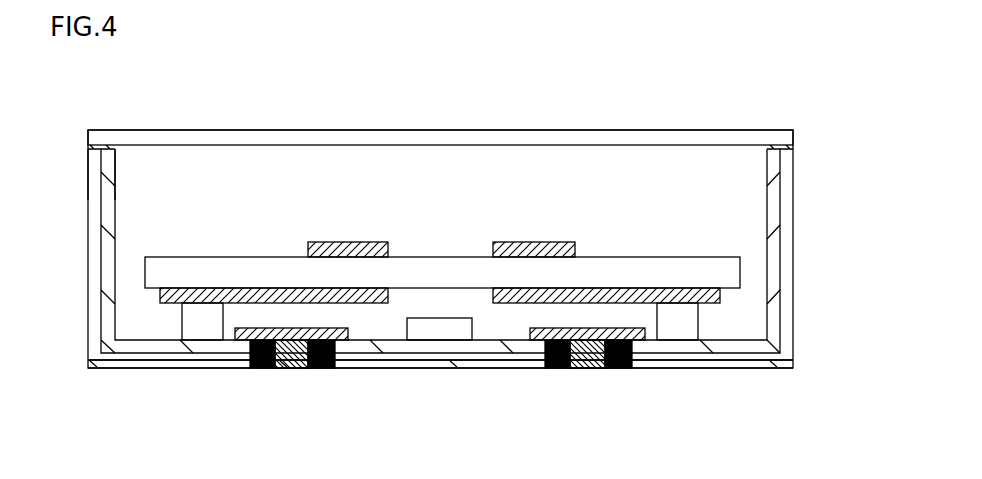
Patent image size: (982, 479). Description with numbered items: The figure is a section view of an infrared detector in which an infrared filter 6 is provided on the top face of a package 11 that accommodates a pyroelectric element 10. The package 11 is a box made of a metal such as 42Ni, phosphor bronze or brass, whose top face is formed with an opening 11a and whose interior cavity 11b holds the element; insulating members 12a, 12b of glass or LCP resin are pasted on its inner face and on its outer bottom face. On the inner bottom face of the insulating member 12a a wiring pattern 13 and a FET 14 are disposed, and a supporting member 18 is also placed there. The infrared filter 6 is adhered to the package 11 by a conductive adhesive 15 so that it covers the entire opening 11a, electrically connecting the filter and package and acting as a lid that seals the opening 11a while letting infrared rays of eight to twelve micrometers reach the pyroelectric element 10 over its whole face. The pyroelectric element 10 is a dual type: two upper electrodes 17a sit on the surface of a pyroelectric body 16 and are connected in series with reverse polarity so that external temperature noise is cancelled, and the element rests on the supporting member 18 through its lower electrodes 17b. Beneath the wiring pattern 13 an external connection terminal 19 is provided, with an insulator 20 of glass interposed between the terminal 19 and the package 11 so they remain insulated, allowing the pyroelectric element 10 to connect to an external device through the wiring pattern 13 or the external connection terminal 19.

The infrared filter 6 is at (611, 130).
The pyroelectric element 10 is at (457, 250).
The package 11 is at (797, 300).
The opening 11a is at (115, 162).
The cavity of package 11b is at (672, 173).
The insulating member 12a is at (782, 226).
The insulating member 12b is at (765, 369).
The wiring pattern 13 is at (243, 340).
The FET 14 is at (442, 336).
The conductive adhesive 15 is at (795, 147).
The pyroelectric body 16 is at (203, 257).
The upper electrode 17a is at (352, 242).
The lower electrode 17b is at (362, 303).
The supporting member 18 is at (182, 325).
The external connection terminal 19 is at (292, 368).
The insulator 20 is at (262, 368).